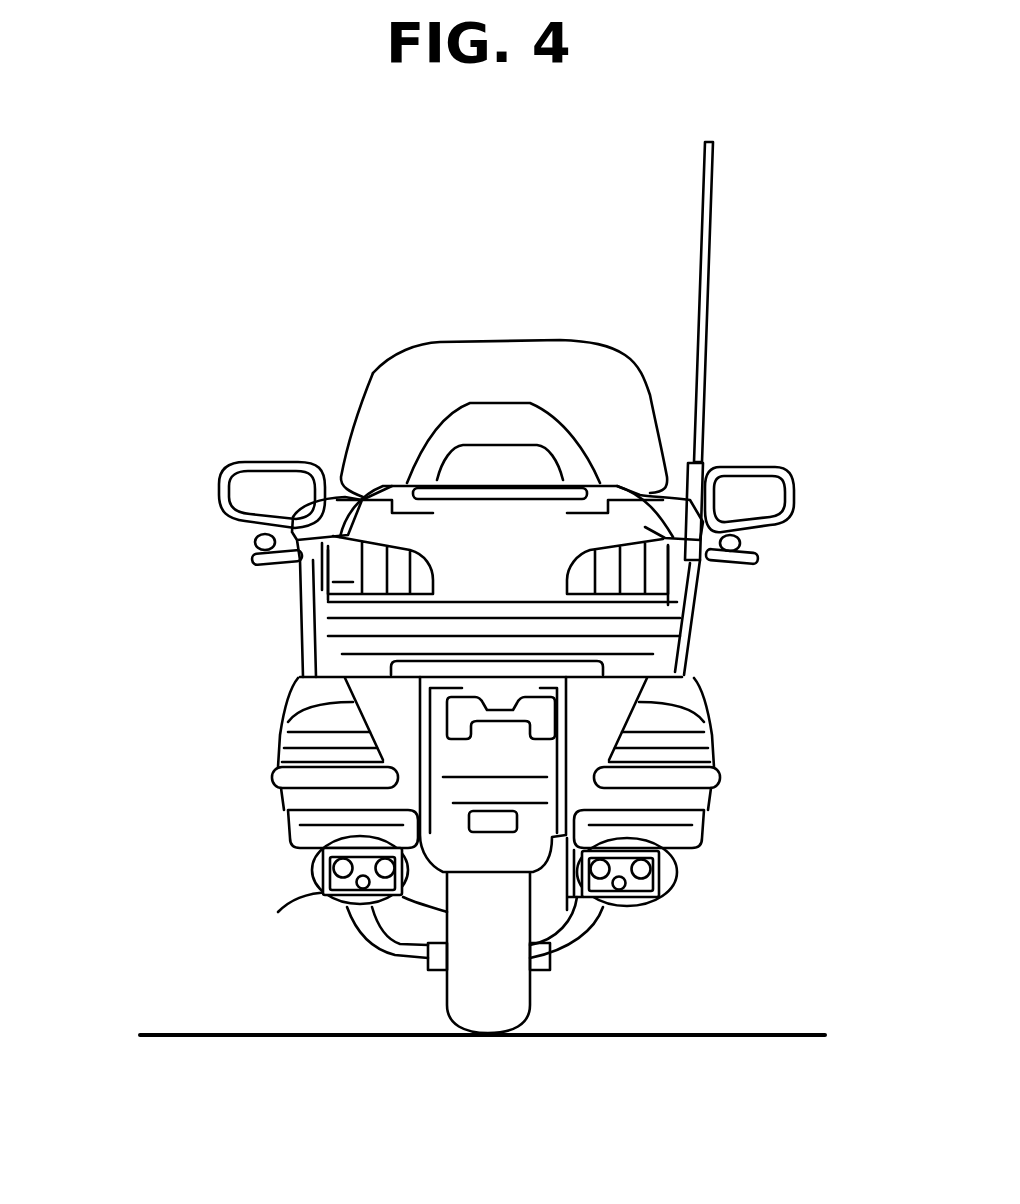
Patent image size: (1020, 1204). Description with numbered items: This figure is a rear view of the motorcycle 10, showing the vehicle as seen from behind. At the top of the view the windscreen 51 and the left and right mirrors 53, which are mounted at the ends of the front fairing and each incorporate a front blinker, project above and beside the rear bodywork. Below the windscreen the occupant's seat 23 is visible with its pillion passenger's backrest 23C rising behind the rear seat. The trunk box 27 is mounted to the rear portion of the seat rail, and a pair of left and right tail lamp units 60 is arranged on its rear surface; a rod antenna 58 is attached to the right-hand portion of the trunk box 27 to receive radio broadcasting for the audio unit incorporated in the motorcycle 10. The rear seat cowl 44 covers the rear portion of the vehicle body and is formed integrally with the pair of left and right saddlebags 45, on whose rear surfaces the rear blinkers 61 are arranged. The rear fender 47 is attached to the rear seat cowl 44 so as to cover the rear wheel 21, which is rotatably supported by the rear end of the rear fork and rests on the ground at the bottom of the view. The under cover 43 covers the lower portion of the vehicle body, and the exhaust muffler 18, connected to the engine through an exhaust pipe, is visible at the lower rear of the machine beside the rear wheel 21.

The motorcycle 10 is at (183, 280).
The exhaust muffler 18 is at (325, 873).
The rear wheel 21 is at (460, 927).
The occupant's seat 23 is at (512, 380).
The pillion passenger's backrest 23C is at (470, 403).
The trunk box 27 is at (507, 538).
The under cover 43 is at (597, 933).
The rear seat cowl 44 is at (300, 858).
The saddlebags 45 is at (297, 688).
The rear fender 47 is at (580, 797).
The windscreen 51 is at (372, 372).
The mirrors 53 is at (240, 462).
The rod antenna 58 is at (714, 216).
The tail lamp units 60 is at (340, 583).
The rear blinkers 61 is at (290, 740).